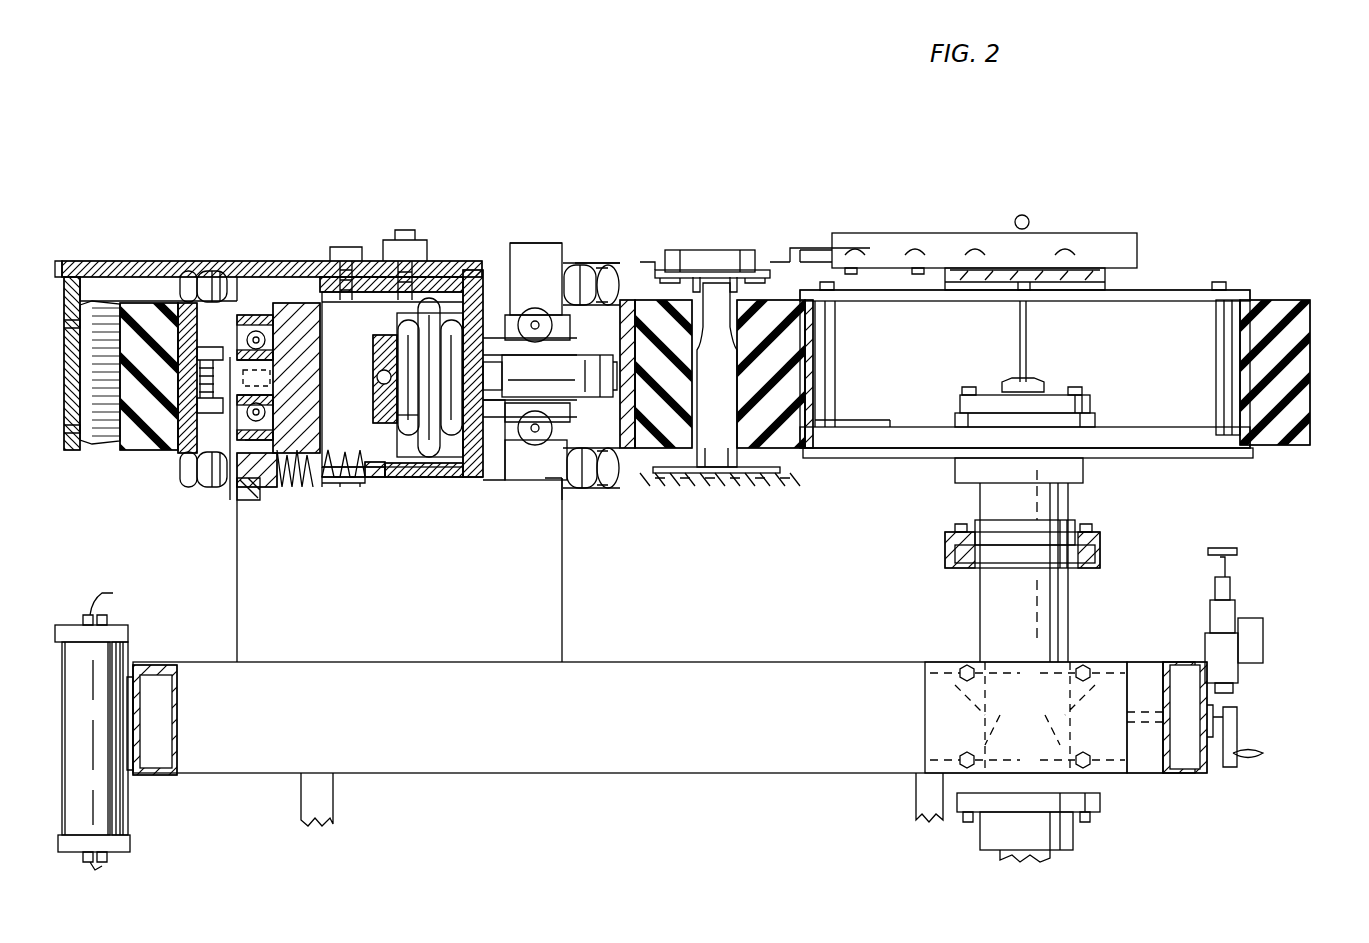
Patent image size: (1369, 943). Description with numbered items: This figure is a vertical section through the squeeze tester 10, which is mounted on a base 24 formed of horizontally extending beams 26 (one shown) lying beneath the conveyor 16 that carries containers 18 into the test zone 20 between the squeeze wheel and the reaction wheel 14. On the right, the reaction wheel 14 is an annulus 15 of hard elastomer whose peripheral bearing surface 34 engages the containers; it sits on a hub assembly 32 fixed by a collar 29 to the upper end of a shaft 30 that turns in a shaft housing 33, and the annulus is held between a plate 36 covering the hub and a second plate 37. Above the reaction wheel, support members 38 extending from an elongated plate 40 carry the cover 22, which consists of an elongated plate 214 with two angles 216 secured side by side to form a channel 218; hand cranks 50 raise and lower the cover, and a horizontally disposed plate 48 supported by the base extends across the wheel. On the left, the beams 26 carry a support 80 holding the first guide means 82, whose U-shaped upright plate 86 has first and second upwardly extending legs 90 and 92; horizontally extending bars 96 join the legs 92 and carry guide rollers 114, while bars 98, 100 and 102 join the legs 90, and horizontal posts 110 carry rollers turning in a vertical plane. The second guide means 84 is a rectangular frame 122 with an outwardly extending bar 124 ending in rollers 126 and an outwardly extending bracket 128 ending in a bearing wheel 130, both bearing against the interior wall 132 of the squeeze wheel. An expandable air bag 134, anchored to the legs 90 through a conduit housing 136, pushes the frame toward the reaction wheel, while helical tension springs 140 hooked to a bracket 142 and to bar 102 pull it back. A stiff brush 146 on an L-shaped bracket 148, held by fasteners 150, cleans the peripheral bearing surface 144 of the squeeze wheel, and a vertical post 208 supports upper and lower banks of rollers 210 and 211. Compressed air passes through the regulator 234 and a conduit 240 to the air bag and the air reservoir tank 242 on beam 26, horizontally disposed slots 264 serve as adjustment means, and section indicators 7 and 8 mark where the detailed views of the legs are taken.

The squeeze tester 10 is at (755, 140).
The reaction wheel 14 is at (1215, 252).
The annulus 15 is at (1270, 298).
The conveyor 16 is at (770, 473).
The containers 18 is at (728, 486).
The test zone 20 is at (760, 498).
The cover 22 is at (665, 268).
The base 24 is at (355, 800).
The horizontally extending beams 26 is at (515, 773).
The collar 29 is at (1090, 400).
The shaft 30 is at (1038, 380).
The hub assembly 32 is at (912, 478).
The shaft housing 33 is at (1062, 615).
The peripheral bearing surface 34 is at (1310, 345).
The plate 36 is at (1062, 296).
The second plate 37 is at (893, 440).
The support members 38 is at (865, 235).
The elongated plate 40 is at (1090, 262).
The horizontally disposed plate 48 is at (1105, 548).
The hand cranks 50 is at (1028, 222).
The section line 7 is at (620, 262).
The section line 8 is at (195, 261).
The support 80 is at (548, 570).
The first guide means 82 is at (352, 525).
The second guide means 84 is at (465, 478).
The upright plate 86 is at (335, 290).
The first upwardly extending leg 90 is at (258, 487).
The second upwardly extending leg 92 is at (505, 480).
The horizontally extending bars 96 is at (572, 305).
The horizontally extending bar 98 is at (275, 316).
The horizontally extending bar 100 is at (275, 412).
The horizontal bar 102 is at (240, 500).
The horizontal posts 110 is at (275, 345).
The guide rollers 114 is at (540, 308).
The rectangular frame 122 is at (440, 480).
The outwardly extending bar 124 is at (230, 500).
The rollers 126 is at (200, 445).
The outwardly extending bracket 128 is at (525, 315).
The bearing wheel 130 is at (550, 376).
The interior wall 132 is at (220, 275).
The expandable air bag 134 is at (427, 438).
The conduit housing 136 is at (432, 298).
The helical tension springs 140 is at (305, 488).
The horizontally extending bracket 142 is at (345, 487).
The peripheral bearing surface 144 is at (695, 486).
The stiff brush 146 is at (100, 445).
The L-shaped bracket 148 is at (90, 261).
The fasteners 150 is at (346, 261).
The elongated vertical post 208 is at (515, 243).
The upper bank of rollers 210 is at (578, 263).
The lower bank of rollers 211 is at (558, 500).
The elongated plate 214 is at (705, 283).
The angles 216 is at (690, 288).
The channel 218 is at (727, 280).
The regulator 234 is at (1238, 612).
The conduit 240 is at (93, 612).
The air reservoir tank 242 is at (122, 662).
The horizontally disposed slots 264 is at (1094, 717).